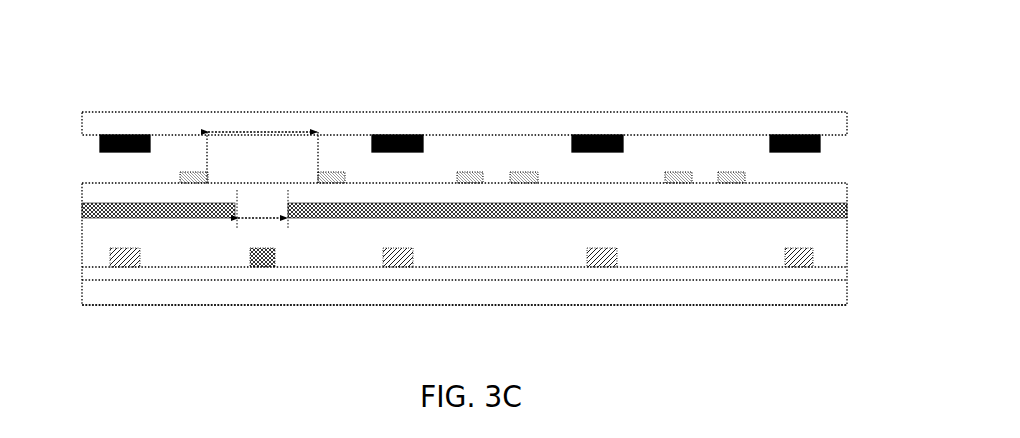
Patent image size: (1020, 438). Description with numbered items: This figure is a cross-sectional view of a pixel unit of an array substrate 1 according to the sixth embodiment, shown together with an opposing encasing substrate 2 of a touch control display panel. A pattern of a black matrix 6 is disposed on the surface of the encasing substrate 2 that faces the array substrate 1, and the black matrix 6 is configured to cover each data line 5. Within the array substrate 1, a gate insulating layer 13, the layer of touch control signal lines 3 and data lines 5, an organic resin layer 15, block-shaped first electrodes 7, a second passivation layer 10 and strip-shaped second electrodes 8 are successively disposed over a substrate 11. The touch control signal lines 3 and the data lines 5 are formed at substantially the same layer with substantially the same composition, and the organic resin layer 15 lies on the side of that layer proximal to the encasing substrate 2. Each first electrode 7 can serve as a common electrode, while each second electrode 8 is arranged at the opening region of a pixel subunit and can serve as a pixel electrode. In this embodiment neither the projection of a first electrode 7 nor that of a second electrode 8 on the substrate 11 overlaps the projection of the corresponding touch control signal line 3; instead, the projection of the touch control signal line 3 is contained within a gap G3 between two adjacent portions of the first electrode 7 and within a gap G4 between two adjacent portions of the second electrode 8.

The array substrate 1 is at (78, 229).
The encasing substrate 2 is at (92, 107).
The touch control signal line 3 is at (260, 260).
The data line 5 is at (397, 257).
The black matrix 6 is at (820, 136).
The first electrode 7 is at (203, 210).
The second electrode 8 is at (333, 183).
The second passivation layer 10 is at (824, 197).
The substrate 11 is at (830, 290).
The gate insulating layer 13 is at (832, 272).
The organic resin layer 15 is at (830, 250).
The gap G3 is at (273, 223).
The gap G4 is at (252, 128).